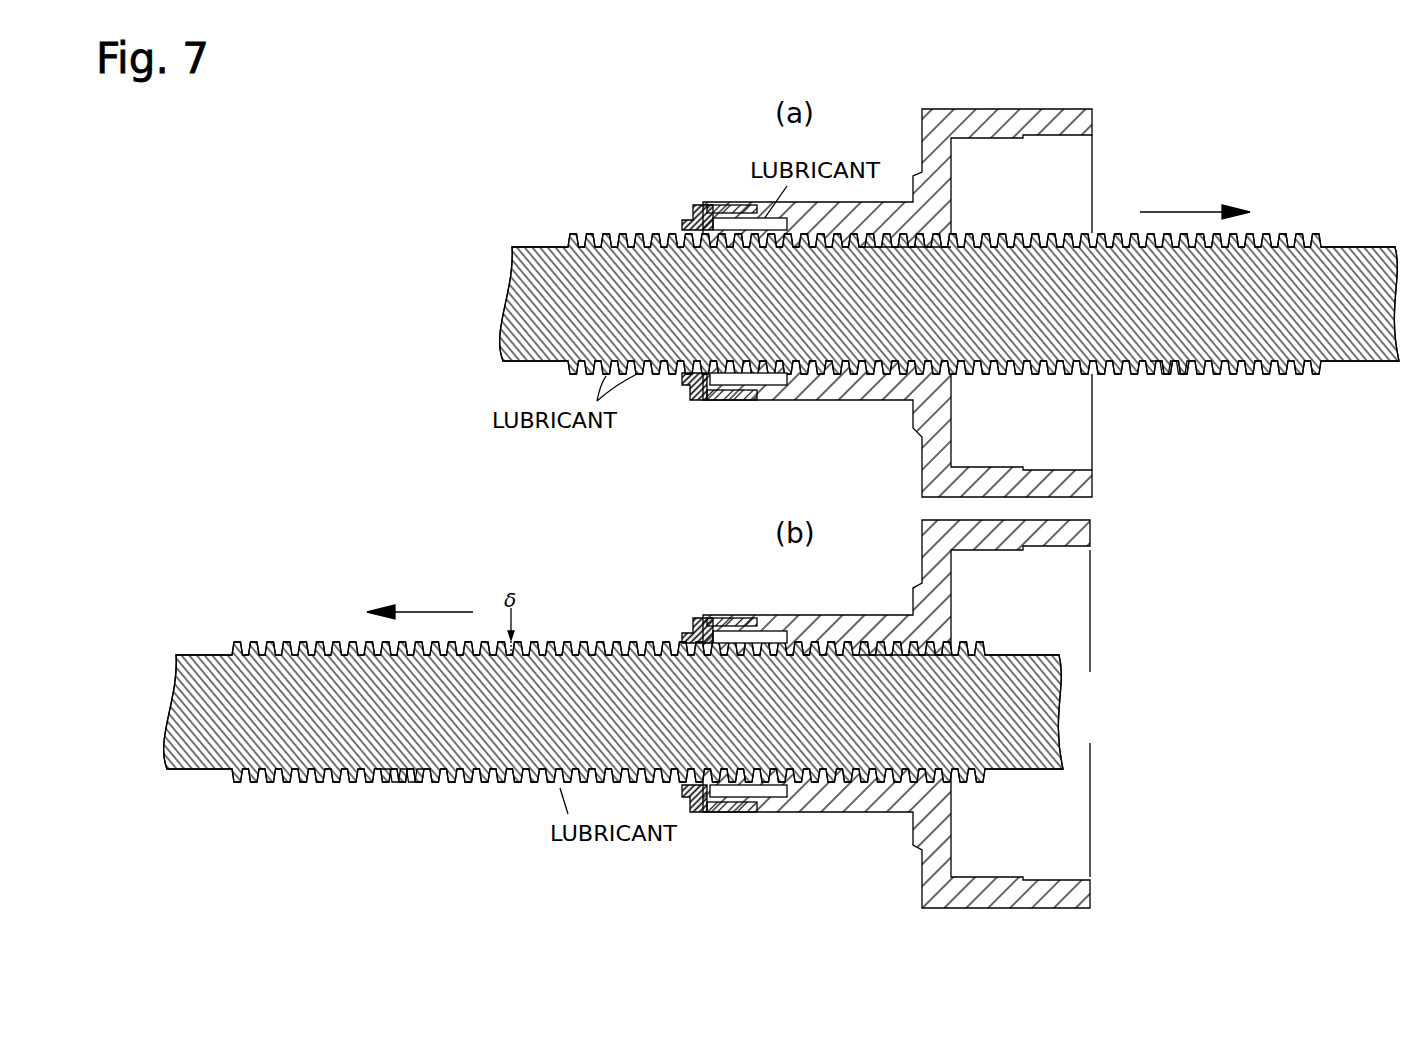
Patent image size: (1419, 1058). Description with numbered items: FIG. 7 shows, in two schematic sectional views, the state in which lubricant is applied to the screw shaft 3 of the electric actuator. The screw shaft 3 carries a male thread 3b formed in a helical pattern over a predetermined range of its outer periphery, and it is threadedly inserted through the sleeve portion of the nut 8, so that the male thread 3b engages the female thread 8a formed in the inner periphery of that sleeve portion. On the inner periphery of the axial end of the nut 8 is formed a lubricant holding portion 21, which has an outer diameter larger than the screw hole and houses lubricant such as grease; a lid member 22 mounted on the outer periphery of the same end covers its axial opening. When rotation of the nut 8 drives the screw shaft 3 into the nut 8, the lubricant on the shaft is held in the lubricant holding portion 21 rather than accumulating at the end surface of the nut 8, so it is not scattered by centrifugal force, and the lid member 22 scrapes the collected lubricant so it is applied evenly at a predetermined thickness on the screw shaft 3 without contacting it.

The screw shaft 3 is at (1340, 260).
The male thread 3b is at (1193, 376).
The nut 8 is at (1078, 124).
The female thread 8a is at (920, 246).
The lubricant holding portion 21 is at (708, 393).
The lid member 22 is at (698, 212).